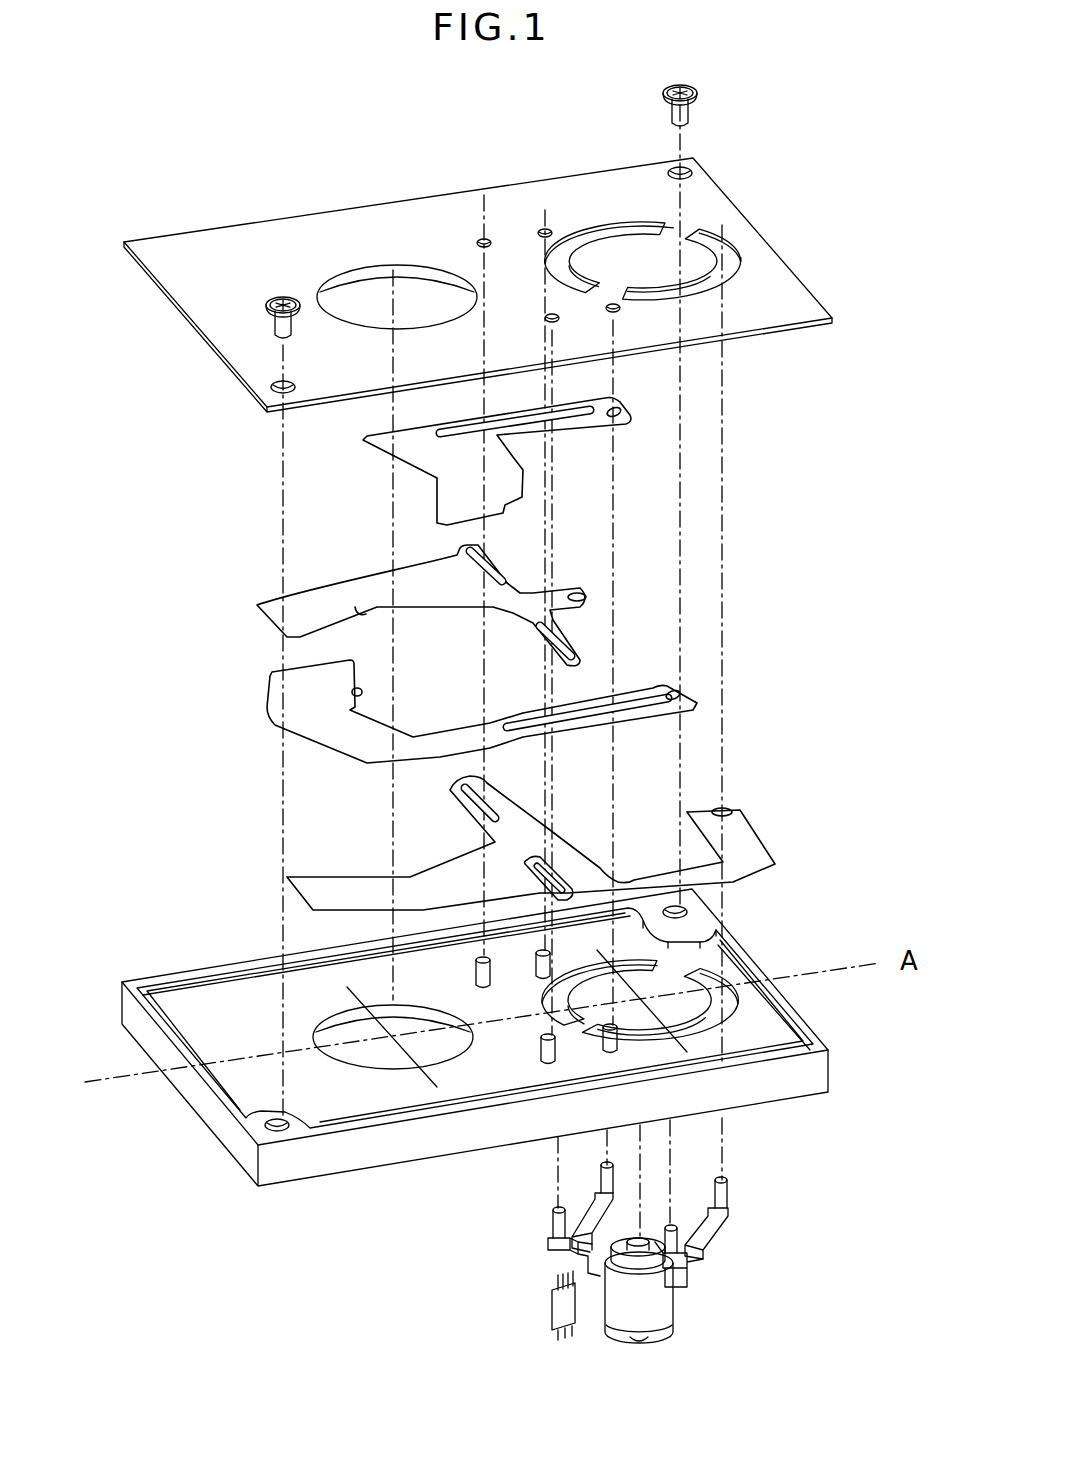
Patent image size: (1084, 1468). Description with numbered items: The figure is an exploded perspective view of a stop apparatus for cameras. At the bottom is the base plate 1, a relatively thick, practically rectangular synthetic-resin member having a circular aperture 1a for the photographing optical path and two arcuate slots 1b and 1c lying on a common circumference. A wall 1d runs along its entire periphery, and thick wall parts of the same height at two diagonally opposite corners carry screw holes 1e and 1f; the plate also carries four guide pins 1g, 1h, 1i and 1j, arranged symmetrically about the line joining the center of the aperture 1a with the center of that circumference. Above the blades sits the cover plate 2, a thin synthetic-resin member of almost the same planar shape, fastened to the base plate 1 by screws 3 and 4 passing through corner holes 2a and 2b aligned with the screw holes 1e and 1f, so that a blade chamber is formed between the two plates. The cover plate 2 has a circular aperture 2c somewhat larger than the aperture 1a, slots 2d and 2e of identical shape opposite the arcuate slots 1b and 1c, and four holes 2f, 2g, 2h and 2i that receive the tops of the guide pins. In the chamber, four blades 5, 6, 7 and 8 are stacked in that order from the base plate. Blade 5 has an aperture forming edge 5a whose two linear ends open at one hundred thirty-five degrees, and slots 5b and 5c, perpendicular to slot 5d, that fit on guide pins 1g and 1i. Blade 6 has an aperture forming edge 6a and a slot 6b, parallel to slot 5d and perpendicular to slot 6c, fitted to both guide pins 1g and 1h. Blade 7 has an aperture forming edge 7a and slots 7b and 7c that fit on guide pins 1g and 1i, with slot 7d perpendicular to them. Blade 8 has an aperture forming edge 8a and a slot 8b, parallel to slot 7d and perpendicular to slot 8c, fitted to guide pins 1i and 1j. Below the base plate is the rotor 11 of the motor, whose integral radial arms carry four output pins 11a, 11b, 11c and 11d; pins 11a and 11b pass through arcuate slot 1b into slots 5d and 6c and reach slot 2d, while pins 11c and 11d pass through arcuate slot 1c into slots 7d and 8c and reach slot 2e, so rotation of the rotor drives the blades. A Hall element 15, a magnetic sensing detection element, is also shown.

The base plate 1 is at (491, 1062).
The circular aperture 1a is at (350, 1063).
The arcuate slot 1b is at (730, 1003).
The arcuate slot 1c is at (660, 957).
The wall 1d is at (198, 973).
The screw hole 1e is at (263, 1124).
The screw hole 1f is at (687, 914).
The guide pin 1g is at (540, 1043).
The guide pin 1h is at (605, 1033).
The guide pin 1i is at (475, 962).
The guide pin 1j is at (538, 958).
The cover plate 2 is at (190, 300).
The hole 2a is at (272, 383).
The hole 2b is at (690, 172).
The circular aperture 2c is at (335, 300).
The slot 2d is at (743, 248).
The slot 2e is at (588, 242).
The hole 2f is at (545, 318).
The hole 2g is at (608, 310).
The hole 2h is at (478, 244).
The hole 2i is at (540, 232).
The screw 3 is at (272, 325).
The screw 4 is at (688, 113).
The blade 5 is at (514, 856).
The aperture forming edge 5a is at (380, 878).
The slot 5b is at (550, 867).
The slot 5c is at (493, 807).
The slot 5d is at (723, 807).
The blade 6 is at (497, 720).
The aperture forming edge 6a is at (352, 692).
The slot 6b is at (637, 710).
The slot 6c is at (697, 695).
The blade 7 is at (443, 606).
The aperture forming edge 7a is at (357, 612).
The slot 7b is at (540, 623).
The slot 7c is at (475, 567).
The slot 7d is at (550, 593).
The blade 8 is at (487, 447).
The aperture forming edge 8a is at (438, 485).
The slot 8b is at (573, 420).
The slot 8c is at (623, 412).
The rotor 11 is at (633, 1270).
The output pin 11a is at (722, 1192).
The output pin 11b is at (672, 1235).
The output pin 11c is at (553, 1220).
The output pin 11d is at (600, 1175).
The Hall element 15 is at (552, 1310).